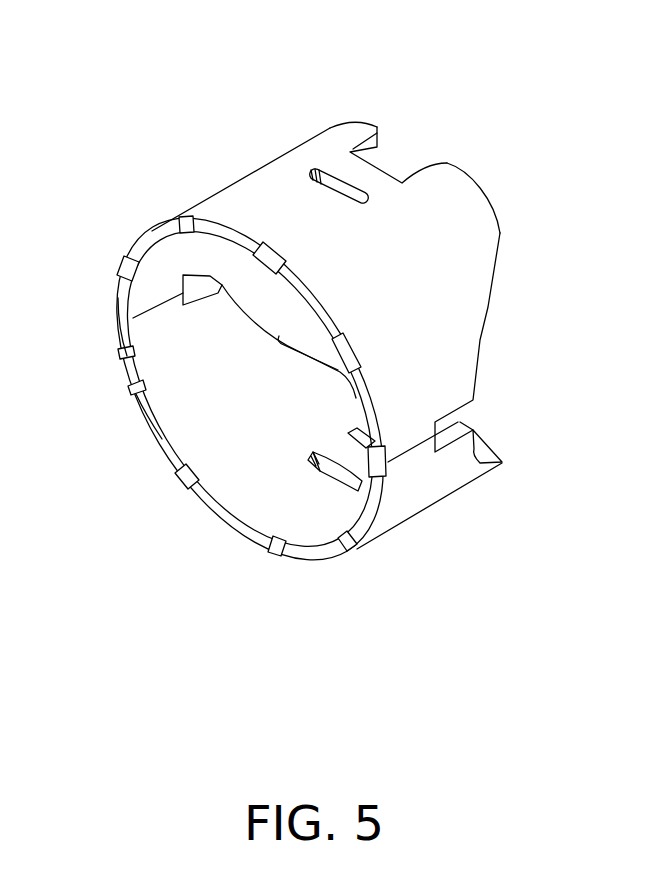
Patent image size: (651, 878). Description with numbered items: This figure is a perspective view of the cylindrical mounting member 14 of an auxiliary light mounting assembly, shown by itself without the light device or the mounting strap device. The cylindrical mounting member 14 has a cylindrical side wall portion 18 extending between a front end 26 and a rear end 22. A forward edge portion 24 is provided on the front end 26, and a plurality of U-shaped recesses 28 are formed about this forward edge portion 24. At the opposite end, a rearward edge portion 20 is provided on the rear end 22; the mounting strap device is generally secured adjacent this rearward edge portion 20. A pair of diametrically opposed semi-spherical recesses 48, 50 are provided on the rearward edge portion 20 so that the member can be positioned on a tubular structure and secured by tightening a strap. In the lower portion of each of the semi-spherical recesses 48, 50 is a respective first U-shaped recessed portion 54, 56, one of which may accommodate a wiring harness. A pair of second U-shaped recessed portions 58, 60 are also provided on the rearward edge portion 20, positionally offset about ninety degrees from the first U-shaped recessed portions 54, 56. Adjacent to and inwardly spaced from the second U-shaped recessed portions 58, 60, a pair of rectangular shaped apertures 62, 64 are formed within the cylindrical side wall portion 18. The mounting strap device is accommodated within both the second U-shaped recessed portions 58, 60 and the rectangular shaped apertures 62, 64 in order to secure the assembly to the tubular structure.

The cylindrical mounting member 14 is at (156, 206).
The cylindrical side wall portion 18 is at (425, 243).
The rearward edge portion 20 is at (462, 157).
The rear end 22 is at (341, 106).
The forward edge portion 24 is at (147, 417).
The front end 26 is at (97, 293).
The U-shaped recesses 28 is at (192, 475).
The semi-spherical recess 48 is at (488, 307).
The semi-spherical recess 50 is at (257, 332).
The first U-shaped recessed portion 54 is at (452, 435).
The first U-shaped recessed portion 56 is at (195, 288).
The second U-shaped recessed portion 58 is at (367, 150).
The second U-shaped recessed portion 60 is at (352, 432).
The rectangular shaped aperture 62 is at (335, 182).
The rectangular shaped aperture 64 is at (340, 477).